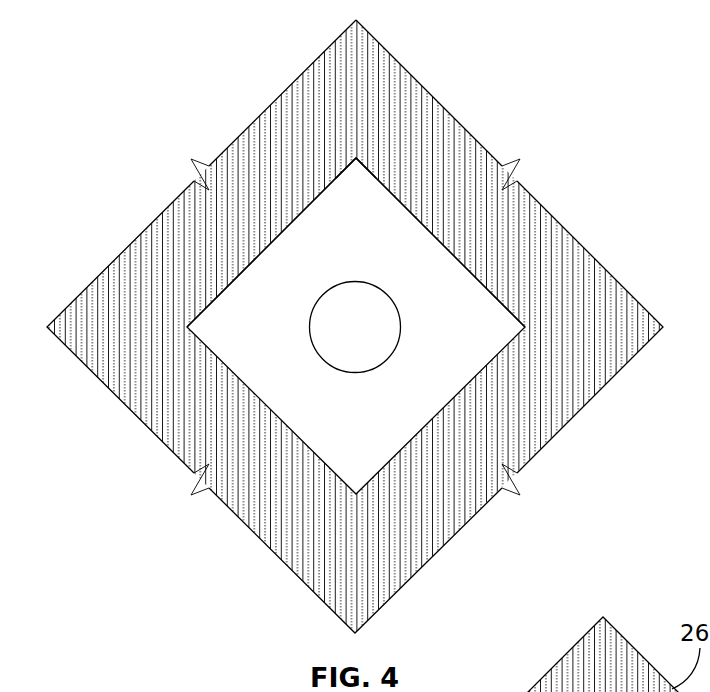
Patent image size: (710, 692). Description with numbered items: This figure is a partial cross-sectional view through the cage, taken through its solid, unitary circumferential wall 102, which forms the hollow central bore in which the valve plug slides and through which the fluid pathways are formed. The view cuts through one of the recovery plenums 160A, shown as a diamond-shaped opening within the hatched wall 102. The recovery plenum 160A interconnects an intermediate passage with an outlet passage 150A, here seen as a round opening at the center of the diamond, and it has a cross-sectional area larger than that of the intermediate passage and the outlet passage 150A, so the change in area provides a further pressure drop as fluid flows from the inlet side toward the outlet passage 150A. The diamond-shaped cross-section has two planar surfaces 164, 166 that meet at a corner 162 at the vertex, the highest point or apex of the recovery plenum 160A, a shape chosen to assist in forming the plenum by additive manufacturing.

The circumferential wall 102 is at (255, 143).
The outlet passage 150A is at (404, 352).
The recovery plenum 160A is at (209, 362).
The corner 162 is at (357, 148).
The planar surface 164 is at (214, 310).
The planar surface 166 is at (424, 236).